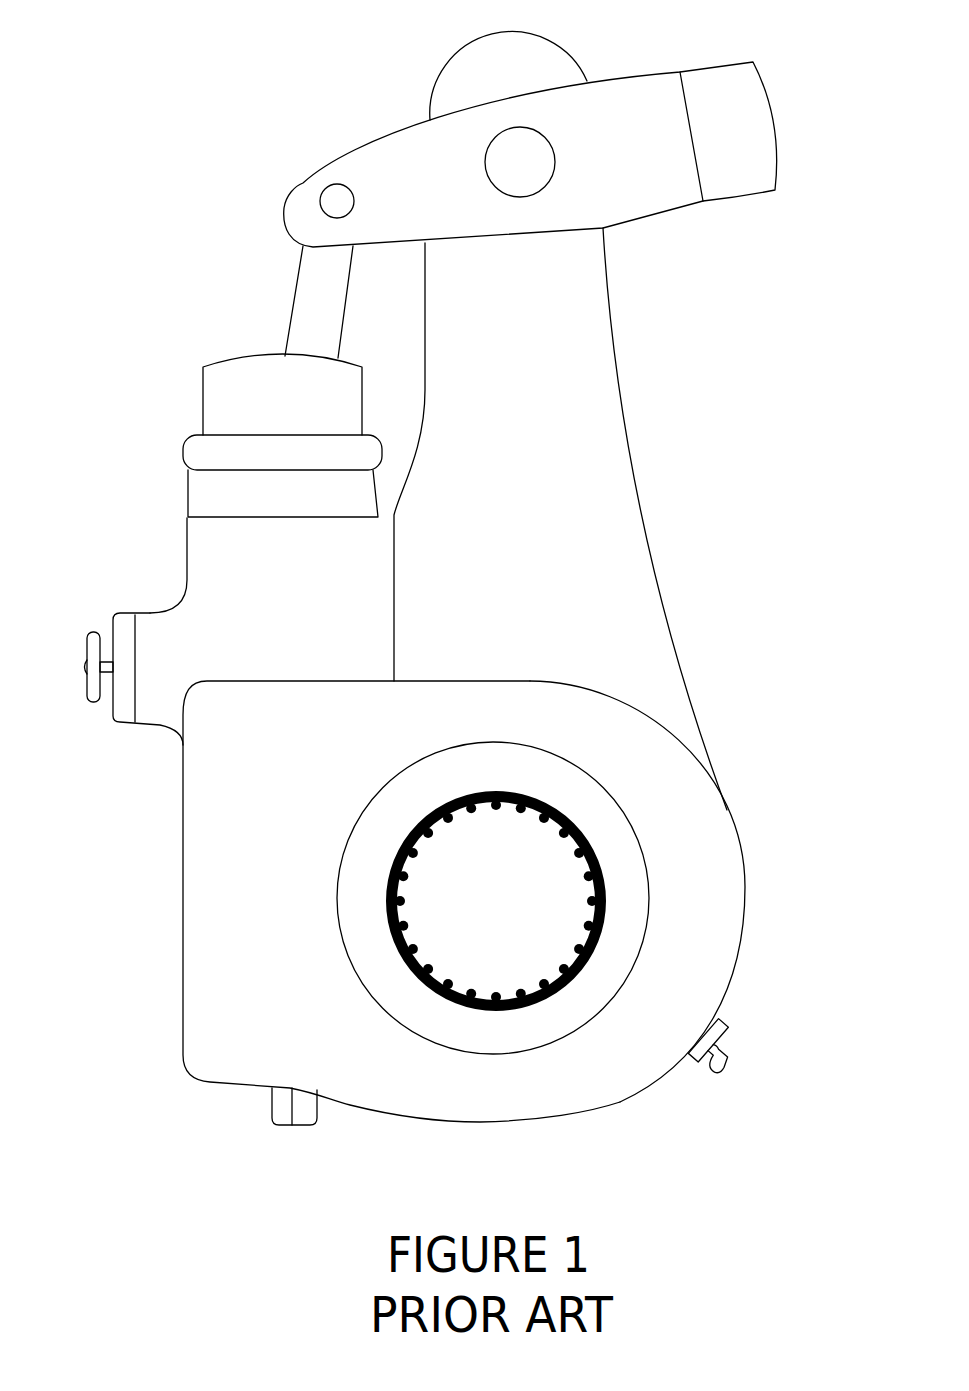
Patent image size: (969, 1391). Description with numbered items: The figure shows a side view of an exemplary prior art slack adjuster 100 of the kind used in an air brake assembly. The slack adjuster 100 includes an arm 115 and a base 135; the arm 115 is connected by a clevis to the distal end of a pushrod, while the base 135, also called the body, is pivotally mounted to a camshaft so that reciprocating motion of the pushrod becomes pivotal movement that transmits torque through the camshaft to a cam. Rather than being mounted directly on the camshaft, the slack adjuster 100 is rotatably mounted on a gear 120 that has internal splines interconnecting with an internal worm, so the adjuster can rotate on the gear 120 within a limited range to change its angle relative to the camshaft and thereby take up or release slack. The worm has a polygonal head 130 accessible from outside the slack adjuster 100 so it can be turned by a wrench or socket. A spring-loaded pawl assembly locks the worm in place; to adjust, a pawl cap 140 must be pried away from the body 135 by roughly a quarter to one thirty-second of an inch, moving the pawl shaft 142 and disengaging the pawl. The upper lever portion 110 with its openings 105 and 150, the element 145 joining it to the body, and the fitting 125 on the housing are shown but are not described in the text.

The slack adjuster 100 is at (720, 760).
The arm hole 105 is at (500, 155).
The lever arm 110 is at (667, 207).
The arm 115 is at (620, 505).
The gear 120 is at (588, 897).
The adjustment nut 125 is at (730, 1012).
The polygonal head 130 is at (305, 1110).
The base 135 is at (197, 917).
The pawl cap 140 is at (90, 700).
The pawl shaft 142 is at (108, 657).
The control rod 145 is at (305, 295).
The rod hole 150 is at (332, 200).